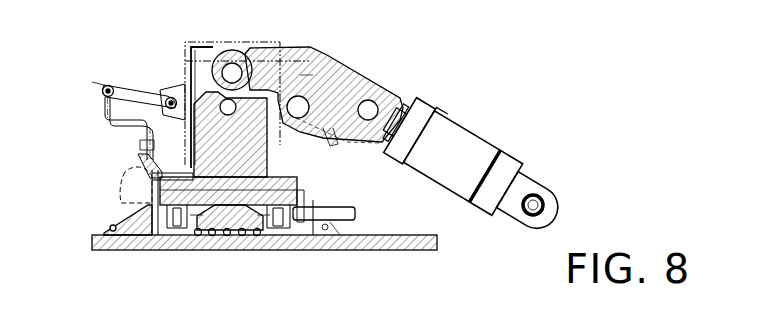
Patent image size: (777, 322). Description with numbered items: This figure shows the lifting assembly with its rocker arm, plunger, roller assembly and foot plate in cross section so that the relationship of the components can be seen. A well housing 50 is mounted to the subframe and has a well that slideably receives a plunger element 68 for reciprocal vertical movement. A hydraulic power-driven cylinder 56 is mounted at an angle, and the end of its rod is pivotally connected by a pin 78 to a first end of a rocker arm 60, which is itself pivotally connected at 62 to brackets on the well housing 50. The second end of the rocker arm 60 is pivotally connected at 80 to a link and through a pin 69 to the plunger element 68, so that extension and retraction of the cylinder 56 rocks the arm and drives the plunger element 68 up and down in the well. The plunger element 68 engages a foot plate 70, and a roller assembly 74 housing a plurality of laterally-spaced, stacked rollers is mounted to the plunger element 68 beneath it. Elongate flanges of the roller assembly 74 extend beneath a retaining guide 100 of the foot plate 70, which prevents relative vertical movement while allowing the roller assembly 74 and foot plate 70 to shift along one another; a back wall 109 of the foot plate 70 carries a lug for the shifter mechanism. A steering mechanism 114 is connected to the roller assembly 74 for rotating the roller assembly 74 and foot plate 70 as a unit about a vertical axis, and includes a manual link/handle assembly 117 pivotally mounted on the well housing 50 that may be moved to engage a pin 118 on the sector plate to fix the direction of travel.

The well housing 50 is at (184, 45).
The hydraulic power-driven cylinder 56 is at (473, 146).
The rocker arm 60 is at (293, 62).
The pivotal connection 62 is at (306, 108).
The plunger element 68 is at (205, 92).
The pin 69 is at (233, 113).
The foot plate 70 is at (137, 244).
The roller assembly 74 is at (205, 245).
The pin 78 is at (372, 106).
The pivotal connection 80 is at (233, 73).
The retaining guide 100 is at (345, 212).
The back wall 109 is at (155, 210).
The steering mechanism 114 is at (93, 68).
The manual link/handle assembly 117 is at (96, 88).
The pin 118 is at (146, 164).